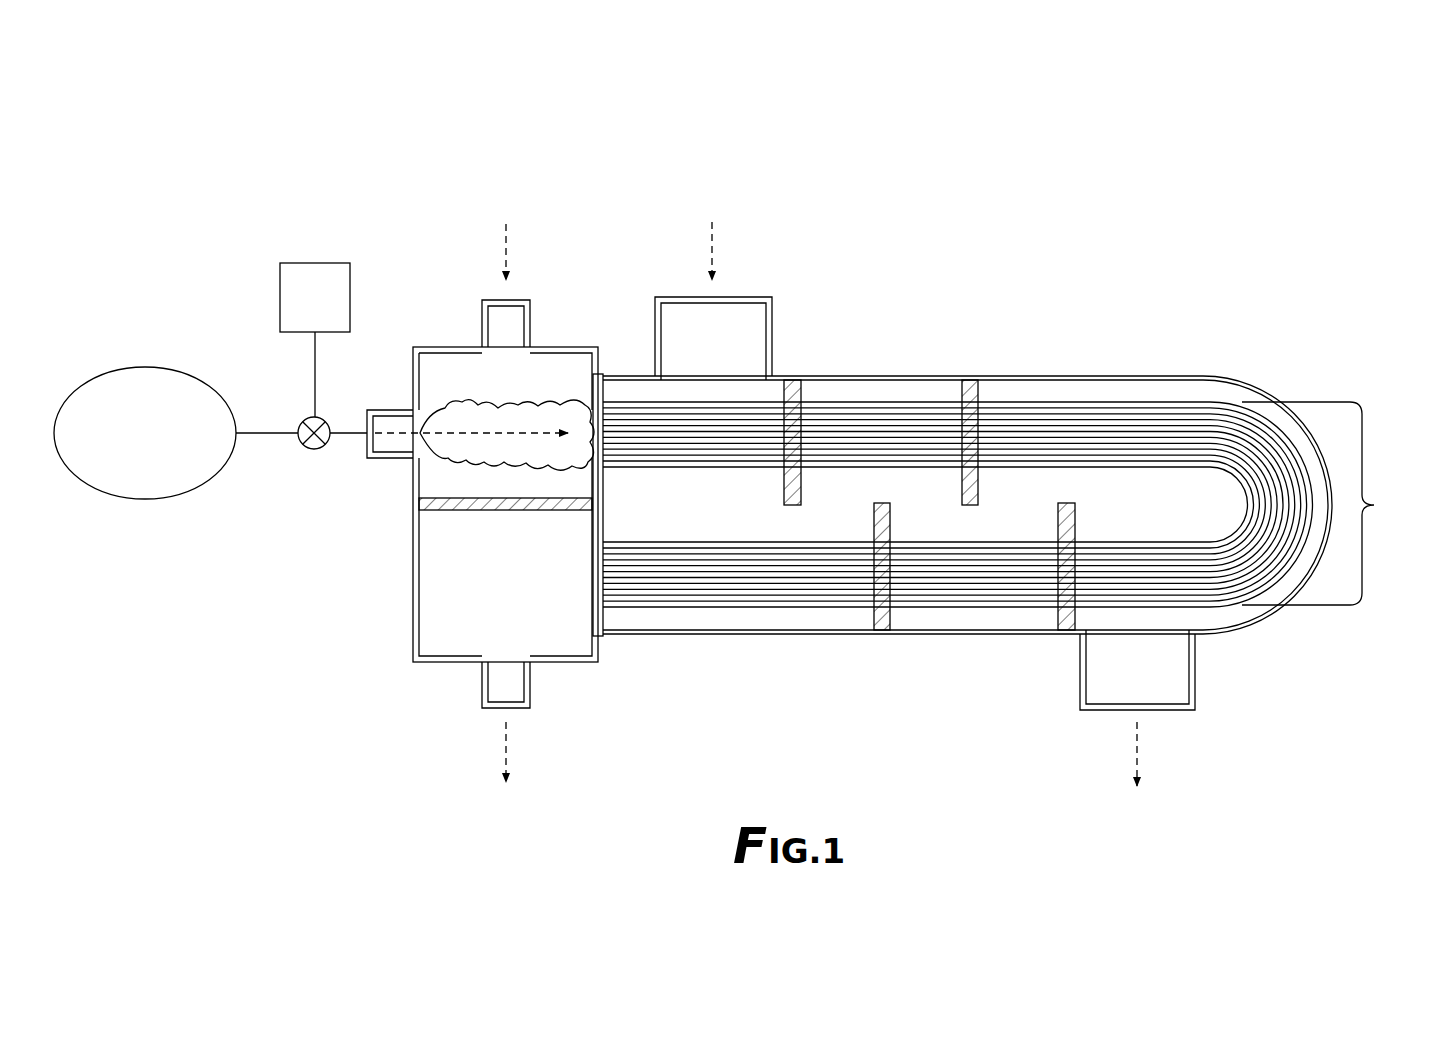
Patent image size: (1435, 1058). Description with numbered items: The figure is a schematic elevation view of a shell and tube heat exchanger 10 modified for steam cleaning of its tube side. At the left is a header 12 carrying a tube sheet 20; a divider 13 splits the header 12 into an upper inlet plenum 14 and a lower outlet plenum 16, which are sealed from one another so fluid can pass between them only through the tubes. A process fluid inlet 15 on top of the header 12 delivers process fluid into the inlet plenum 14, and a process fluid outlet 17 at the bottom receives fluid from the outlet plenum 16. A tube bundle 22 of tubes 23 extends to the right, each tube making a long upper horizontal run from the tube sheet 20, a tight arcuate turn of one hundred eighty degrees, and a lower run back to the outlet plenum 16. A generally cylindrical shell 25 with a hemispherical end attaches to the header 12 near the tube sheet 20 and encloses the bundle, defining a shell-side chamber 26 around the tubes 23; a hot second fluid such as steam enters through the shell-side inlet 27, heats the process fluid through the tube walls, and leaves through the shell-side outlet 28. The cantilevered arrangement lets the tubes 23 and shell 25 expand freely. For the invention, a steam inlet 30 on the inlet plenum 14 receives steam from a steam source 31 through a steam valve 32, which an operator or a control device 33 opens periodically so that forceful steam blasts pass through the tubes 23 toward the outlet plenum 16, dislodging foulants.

The shell and tube heat exchanger 10 is at (1022, 154).
The header 12 is at (407, 575).
The divider 13 is at (443, 512).
The inlet plenum 14 is at (520, 398).
The process fluid inlet 15 is at (546, 307).
The outlet plenum 16 is at (513, 610).
The process fluid outlet 17 is at (530, 687).
The tube sheet 20 is at (603, 490).
The tube bundle 22 is at (1331, 503).
The tubes 23 is at (1107, 418).
The shell 25 is at (1207, 373).
The shell-side chamber 26 is at (1150, 518).
The shell-side inlet 27 is at (776, 308).
The shell-side outlet 28 is at (1080, 672).
The steam inlet 30 is at (372, 458).
The steam source 31 is at (123, 498).
The steam valve 32 is at (318, 418).
The control device 33 is at (330, 283).